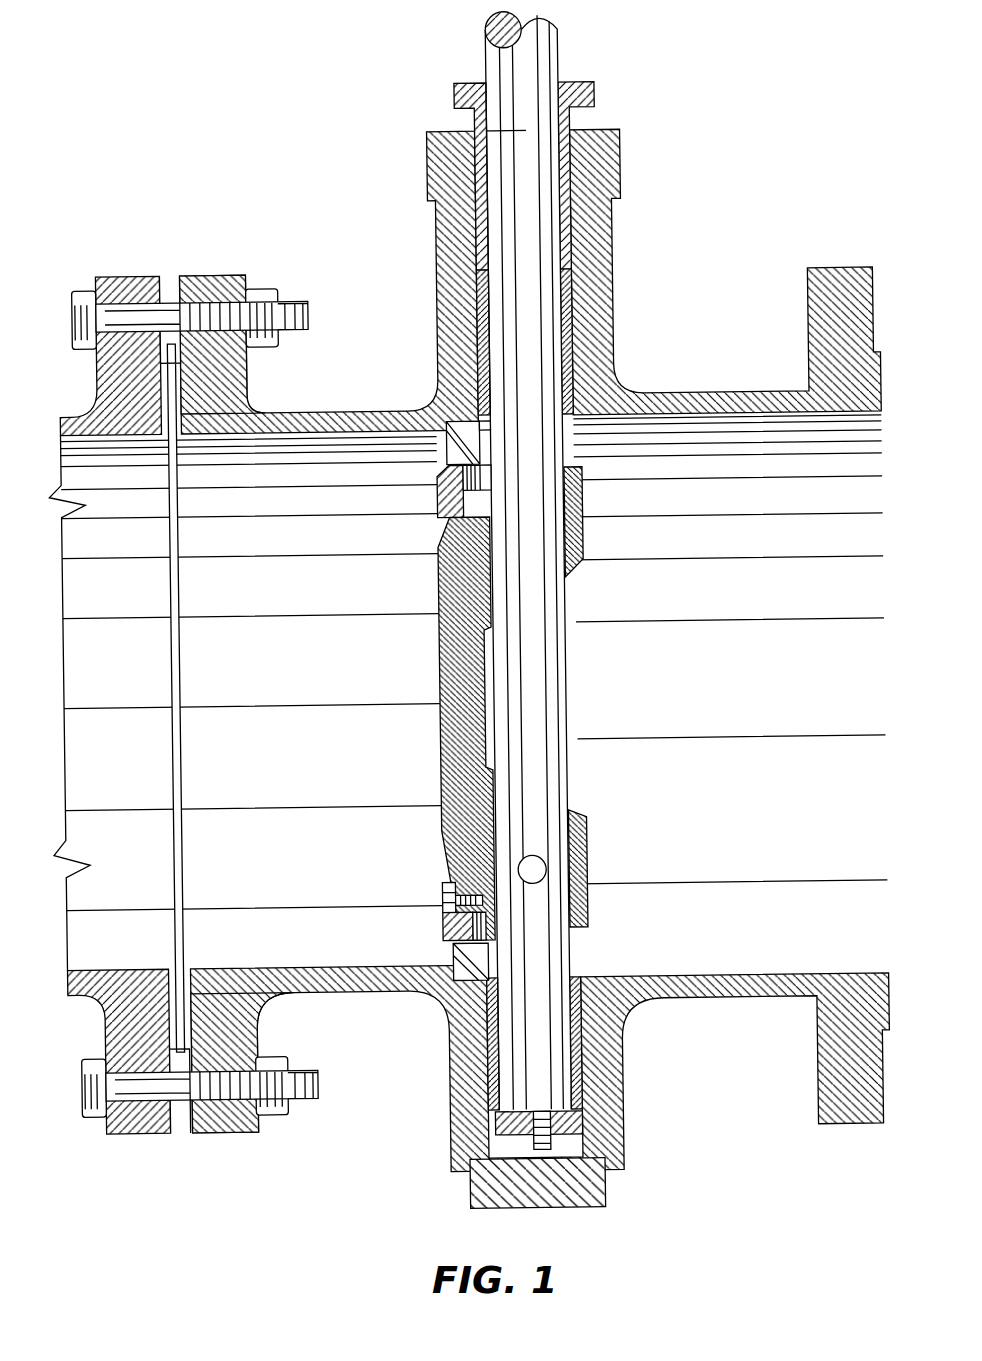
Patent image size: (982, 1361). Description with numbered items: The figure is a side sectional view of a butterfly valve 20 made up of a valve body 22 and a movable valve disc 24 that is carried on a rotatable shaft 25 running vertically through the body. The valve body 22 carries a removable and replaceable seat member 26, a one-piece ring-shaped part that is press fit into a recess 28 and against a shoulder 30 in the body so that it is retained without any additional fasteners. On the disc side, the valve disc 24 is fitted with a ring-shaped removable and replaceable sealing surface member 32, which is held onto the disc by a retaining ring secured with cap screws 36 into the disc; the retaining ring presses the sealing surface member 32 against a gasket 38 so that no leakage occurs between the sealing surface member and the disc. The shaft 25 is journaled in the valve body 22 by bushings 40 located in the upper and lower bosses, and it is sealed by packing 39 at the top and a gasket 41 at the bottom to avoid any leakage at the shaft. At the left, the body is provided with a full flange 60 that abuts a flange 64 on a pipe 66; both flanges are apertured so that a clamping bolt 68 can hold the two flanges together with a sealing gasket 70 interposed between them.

The butterfly valve 20 is at (693, 293).
The valve body 22 is at (660, 395).
The valve disc 24 is at (455, 750).
The rotatable shaft 25 is at (540, 68).
The seat member 26 is at (455, 455).
The recess 28 is at (455, 418).
The shoulder 30 is at (450, 440).
The sealing surface member 32 is at (455, 943).
The cap screws 36 is at (442, 897).
The gasket 38 is at (500, 870).
The packing 39 is at (572, 190).
The bushings 40 is at (574, 400).
The gasket 41 is at (612, 1148).
The flange 60 is at (218, 272).
The flange 64 is at (143, 272).
The pipe 66 is at (78, 412).
The clamping bolt 68 is at (86, 286).
The sealing gasket 70 is at (176, 359).